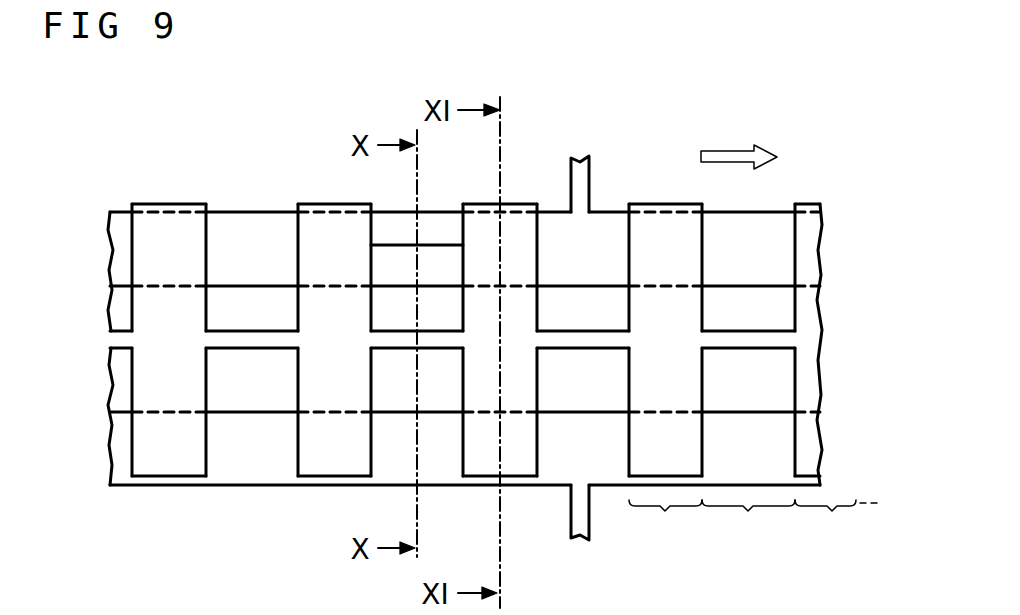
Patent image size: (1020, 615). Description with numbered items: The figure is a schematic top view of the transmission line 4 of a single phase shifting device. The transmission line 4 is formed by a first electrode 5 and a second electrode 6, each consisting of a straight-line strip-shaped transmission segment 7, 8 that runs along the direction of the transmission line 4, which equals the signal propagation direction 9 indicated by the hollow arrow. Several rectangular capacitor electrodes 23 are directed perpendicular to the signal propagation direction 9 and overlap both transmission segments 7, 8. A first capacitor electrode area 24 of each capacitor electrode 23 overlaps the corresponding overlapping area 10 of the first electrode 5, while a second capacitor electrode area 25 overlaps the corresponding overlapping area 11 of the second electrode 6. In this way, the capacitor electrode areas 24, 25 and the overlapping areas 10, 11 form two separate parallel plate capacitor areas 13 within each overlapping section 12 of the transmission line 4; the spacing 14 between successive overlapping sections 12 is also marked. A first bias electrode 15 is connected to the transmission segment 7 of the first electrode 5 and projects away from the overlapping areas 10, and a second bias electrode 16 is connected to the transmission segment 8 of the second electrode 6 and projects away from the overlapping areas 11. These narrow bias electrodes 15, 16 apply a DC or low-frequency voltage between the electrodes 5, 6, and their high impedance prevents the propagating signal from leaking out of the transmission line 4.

The transmission line 4 is at (837, 148).
The first electrode 5 is at (108, 447).
The second electrode 6 is at (104, 247).
The strip-shaped transmission segment 7 is at (218, 477).
The strip-shaped transmission segment 8 is at (240, 222).
The signal propagation direction 9 is at (730, 157).
The overlapping area 10 is at (671, 250).
The overlapping area 11 is at (510, 240).
The overlapping section 12 is at (753, 524).
The parallel plate capacitor area 13 is at (184, 222).
The spacing 14 is at (748, 524).
The first bias electrode 15 is at (588, 185).
The second bias electrode 16 is at (115, 337).
The capacitor electrode 23 is at (175, 378).
The first capacitor electrode area 24 is at (143, 465).
The second capacitor electrode area 25 is at (152, 222).